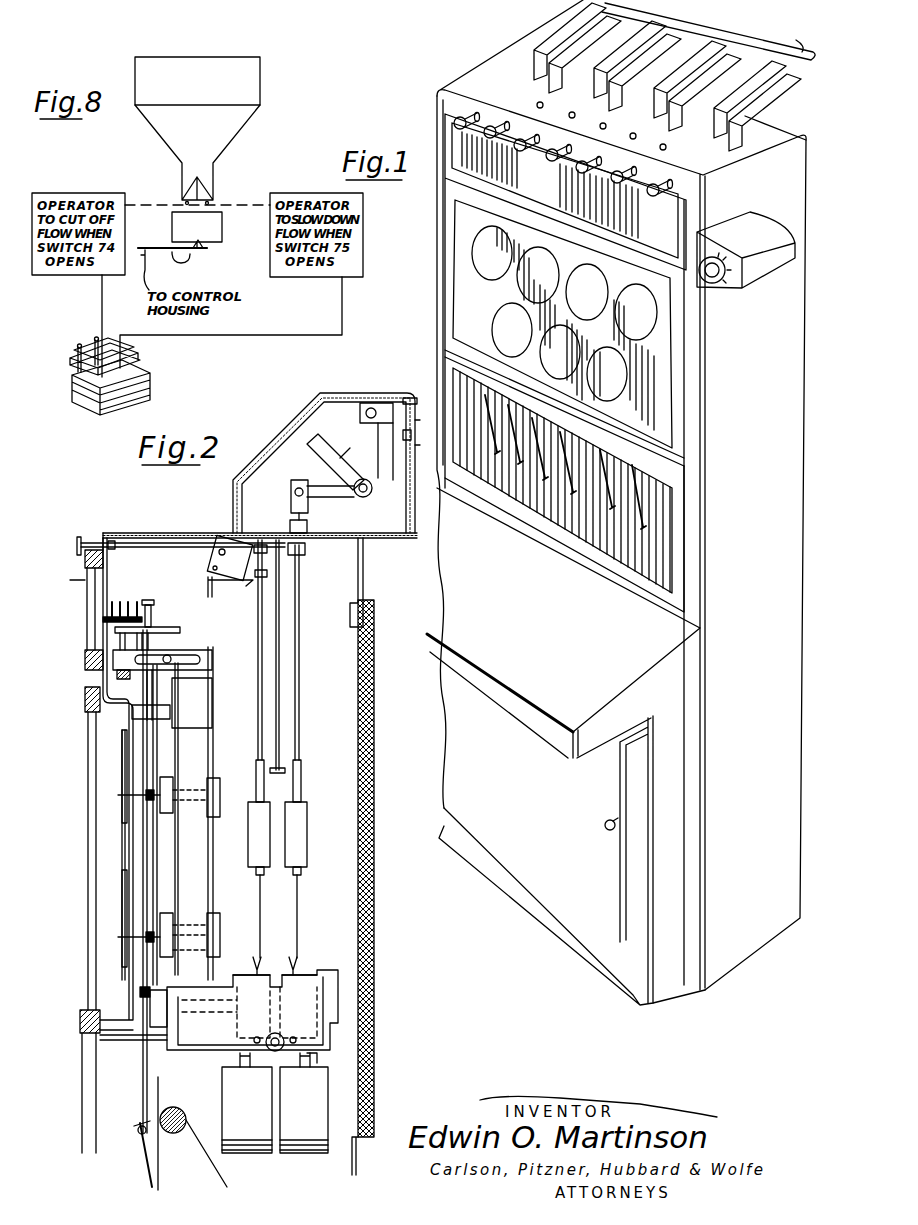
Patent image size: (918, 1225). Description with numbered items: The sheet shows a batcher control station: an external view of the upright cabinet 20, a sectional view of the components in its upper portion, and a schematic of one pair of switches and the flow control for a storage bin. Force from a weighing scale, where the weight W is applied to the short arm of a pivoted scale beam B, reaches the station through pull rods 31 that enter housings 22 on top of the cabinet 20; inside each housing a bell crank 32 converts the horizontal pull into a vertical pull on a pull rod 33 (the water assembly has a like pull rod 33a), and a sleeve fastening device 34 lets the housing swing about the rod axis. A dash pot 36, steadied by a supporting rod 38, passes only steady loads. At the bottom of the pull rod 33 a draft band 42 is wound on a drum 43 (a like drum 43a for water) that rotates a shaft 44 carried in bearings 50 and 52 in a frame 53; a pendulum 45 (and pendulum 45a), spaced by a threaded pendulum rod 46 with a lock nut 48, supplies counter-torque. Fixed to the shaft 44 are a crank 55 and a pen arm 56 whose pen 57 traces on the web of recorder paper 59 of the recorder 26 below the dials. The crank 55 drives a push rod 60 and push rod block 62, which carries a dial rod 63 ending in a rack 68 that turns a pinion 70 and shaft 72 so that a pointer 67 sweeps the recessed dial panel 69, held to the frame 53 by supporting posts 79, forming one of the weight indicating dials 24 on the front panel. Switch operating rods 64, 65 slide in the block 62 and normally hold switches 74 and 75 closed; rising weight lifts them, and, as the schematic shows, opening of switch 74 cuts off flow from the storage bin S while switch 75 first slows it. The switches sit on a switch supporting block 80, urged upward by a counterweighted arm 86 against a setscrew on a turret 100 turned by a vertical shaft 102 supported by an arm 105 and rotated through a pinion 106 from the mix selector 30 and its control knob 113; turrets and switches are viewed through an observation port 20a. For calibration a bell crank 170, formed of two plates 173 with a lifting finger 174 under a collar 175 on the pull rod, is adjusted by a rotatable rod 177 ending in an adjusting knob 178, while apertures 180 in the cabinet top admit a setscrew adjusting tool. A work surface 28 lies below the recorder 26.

In FIG. 8, the storage bin S is at (260, 73).
In FIG. 8, the weight W is at (222, 223).
In FIG. 8, the pivoted beam B is at (172, 254).
In FIG. 8, the pull rods 31 is at (155, 270).
In FIG. 1, the pull rods 31 is at (748, 31).
In FIG. 2, the pull rods 31 is at (406, 398).
In FIG. 8, the switch operating rod 64 is at (76, 350).
In FIG. 8, the switch operating rod 65 is at (96, 340).
In FIG. 8, the switch 74 is at (82, 392).
In FIG. 8, the auxiliary switch 75 is at (122, 368).
In FIG. 1, the cabinet 20 is at (436, 113).
In FIG. 1, the observation port 20a is at (472, 161).
In FIG. 2, the observation port 20a is at (226, 771).
In FIG. 1, the housings 22 is at (552, 33).
In FIG. 2, the housings 22 is at (333, 428).
In FIG. 1, the apertures 180 is at (667, 148).
In FIG. 2, the apertures 180 is at (130, 533).
In FIG. 1, the adjusting knob 178 is at (628, 197).
In FIG. 2, the adjusting knob 178 is at (82, 530).
In FIG. 1, the mix selector 30 is at (728, 229).
In FIG. 1, the control knob 113 is at (712, 283).
In FIG. 1, the weight indicating dials 24 is at (504, 287).
In FIG. 1, the recorder paper 59 is at (578, 512).
In FIG. 2, the recorder paper 59 is at (160, 1162).
In FIG. 1, the pen 57 is at (564, 490).
In FIG. 2, the pen 57 is at (142, 1186).
In FIG. 1, the recorder 26 is at (713, 540).
In FIG. 2, the recorder 26 is at (76, 1134).
In FIG. 1, the work surface 28 is at (524, 694).
In FIG. 2, the pull rod 33 is at (326, 448).
In FIG. 2, the bell crank 32 is at (372, 470).
In FIG. 2, the sleeve fastening device 34 is at (308, 528).
In FIG. 2, the rotatable rod 177 is at (167, 541).
In FIG. 2, the plates 173 is at (227, 540).
In FIG. 2, the bell crank 170 is at (208, 582).
In FIG. 2, the lifting finger 174 is at (236, 590).
In FIG. 2, the collar 175 is at (258, 578).
In FIG. 2, the turret 100 is at (118, 612).
In FIG. 2, the push rod block 62 is at (152, 606).
In FIG. 2, the switch supporting block 80 is at (172, 626).
In FIG. 2, the vertical shaft 102 is at (120, 637).
In FIG. 2, the arm 105 is at (200, 650).
In FIG. 2, the counterweighted arm 86 is at (212, 659).
In FIG. 2, the pinion 106 is at (116, 683).
In FIG. 2, the dial panel 69 is at (100, 714).
In FIG. 2, the supporting posts 79 is at (128, 1042).
In FIG. 2, the dial rod 63 is at (170, 750).
In FIG. 2, the dial pointer 67 is at (120, 754).
In FIG. 2, the pinion 70 is at (166, 791).
In FIG. 2, the shaft 72 is at (128, 822).
In FIG. 2, the rack 68 is at (160, 826).
In FIG. 2, the push rod 60 is at (150, 882).
In FIG. 2, the frame 53 is at (208, 893).
In FIG. 2, the pull rod 33a is at (258, 724).
In FIG. 2, the supporting rod 38 is at (281, 668).
In FIG. 2, the dash pot 36 is at (311, 824).
In FIG. 2, the drum 43a is at (241, 972).
In FIG. 2, the draft band 42 is at (299, 960).
In FIG. 2, the drum 43 is at (310, 975).
In FIG. 2, the anti-friction bearing 50 is at (183, 976).
In FIG. 2, the anti-friction bearing 52 is at (336, 988).
In FIG. 2, the crank 55 is at (138, 1002).
In FIG. 2, the shaft 44 is at (248, 1034).
In FIG. 2, the pendulum rod 46 is at (324, 1060).
In FIG. 2, the lock nut 48 is at (308, 1066).
In FIG. 2, the pen arm 56 is at (150, 1094).
In FIG. 2, the pendulum 45a is at (250, 1156).
In FIG. 2, the pendulum 45 is at (306, 1156).